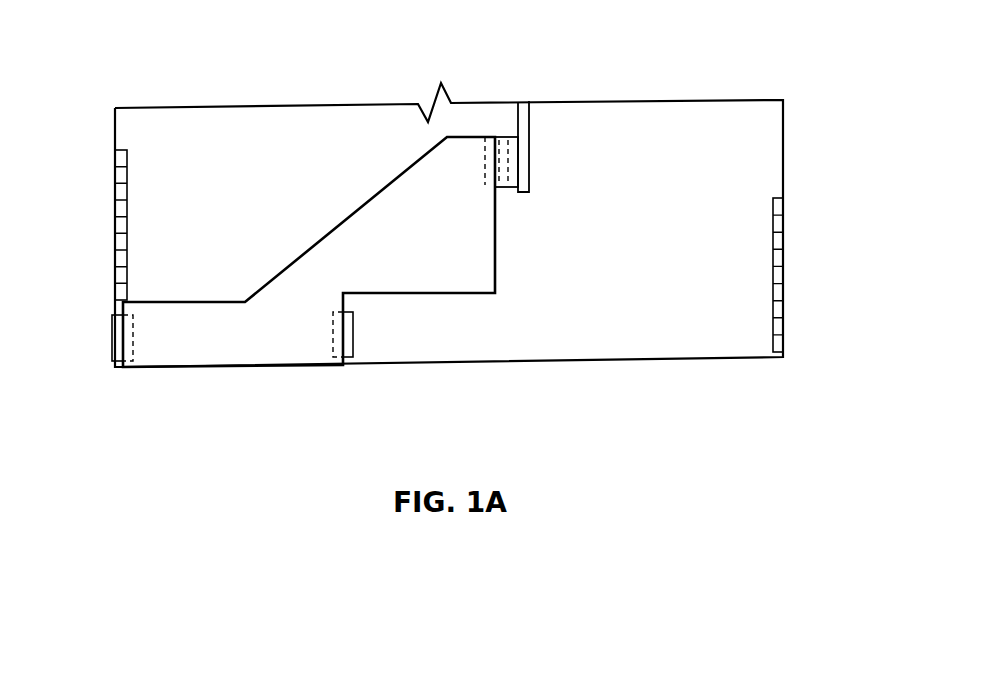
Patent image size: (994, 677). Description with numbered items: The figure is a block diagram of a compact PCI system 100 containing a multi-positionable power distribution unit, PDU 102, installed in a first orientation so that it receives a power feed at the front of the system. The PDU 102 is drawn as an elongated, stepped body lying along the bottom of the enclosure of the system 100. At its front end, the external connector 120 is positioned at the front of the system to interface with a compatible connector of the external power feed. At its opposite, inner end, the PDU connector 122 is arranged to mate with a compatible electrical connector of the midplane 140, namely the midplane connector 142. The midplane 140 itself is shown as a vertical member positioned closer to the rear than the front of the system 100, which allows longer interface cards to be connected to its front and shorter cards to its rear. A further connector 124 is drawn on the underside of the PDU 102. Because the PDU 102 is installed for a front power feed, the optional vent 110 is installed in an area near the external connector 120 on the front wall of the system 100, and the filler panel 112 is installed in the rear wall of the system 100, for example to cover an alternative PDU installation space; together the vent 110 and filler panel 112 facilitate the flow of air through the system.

The system 100 is at (449, 213).
The multi-positionable power distribution unit (PDU) 102 is at (309, 252).
The vent 110 is at (115, 267).
The filler panel 112 is at (784, 264).
The external connector 120 is at (122, 363).
The PDU connector 122 is at (485, 168).
The connector 124 is at (354, 330).
The midplane 140 is at (525, 100).
The midplane connector 142 is at (515, 137).